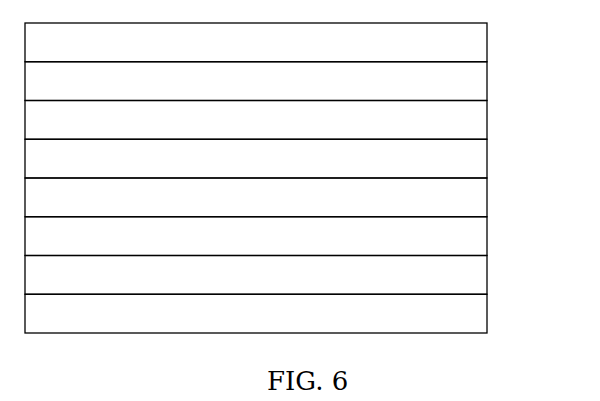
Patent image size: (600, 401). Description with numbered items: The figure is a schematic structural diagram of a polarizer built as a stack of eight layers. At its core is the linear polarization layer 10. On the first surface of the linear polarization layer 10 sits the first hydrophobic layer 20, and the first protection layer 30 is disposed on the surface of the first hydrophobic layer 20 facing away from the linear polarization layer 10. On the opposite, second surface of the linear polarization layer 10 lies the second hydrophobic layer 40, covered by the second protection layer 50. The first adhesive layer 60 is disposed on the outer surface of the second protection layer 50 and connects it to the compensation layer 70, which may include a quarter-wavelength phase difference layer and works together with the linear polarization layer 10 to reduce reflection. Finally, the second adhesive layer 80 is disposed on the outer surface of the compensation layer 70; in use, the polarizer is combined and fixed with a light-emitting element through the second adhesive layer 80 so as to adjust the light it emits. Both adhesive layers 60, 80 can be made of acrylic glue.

The linear polarization layer 10 is at (484, 120).
The first hydrophobic layer 20 is at (484, 81).
The first protection layer 30 is at (484, 42).
The second hydrophobic layer 40 is at (482, 159).
The second protection layer 50 is at (481, 198).
The first adhesive layer 60 is at (480, 237).
The compensation layer 70 is at (480, 275).
The second adhesive layer 80 is at (480, 314).